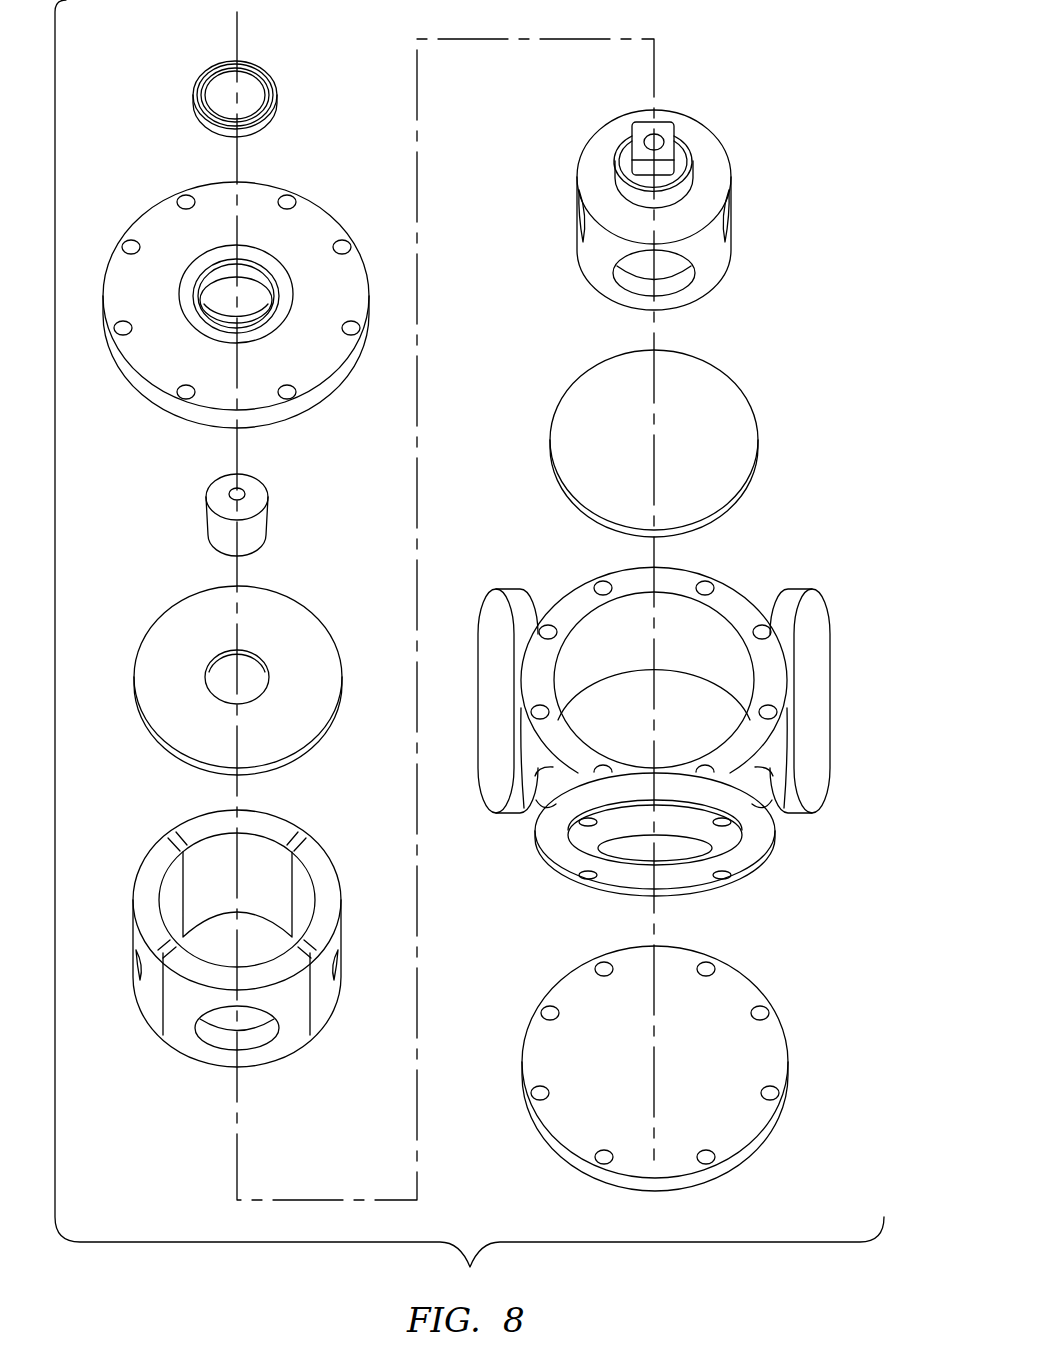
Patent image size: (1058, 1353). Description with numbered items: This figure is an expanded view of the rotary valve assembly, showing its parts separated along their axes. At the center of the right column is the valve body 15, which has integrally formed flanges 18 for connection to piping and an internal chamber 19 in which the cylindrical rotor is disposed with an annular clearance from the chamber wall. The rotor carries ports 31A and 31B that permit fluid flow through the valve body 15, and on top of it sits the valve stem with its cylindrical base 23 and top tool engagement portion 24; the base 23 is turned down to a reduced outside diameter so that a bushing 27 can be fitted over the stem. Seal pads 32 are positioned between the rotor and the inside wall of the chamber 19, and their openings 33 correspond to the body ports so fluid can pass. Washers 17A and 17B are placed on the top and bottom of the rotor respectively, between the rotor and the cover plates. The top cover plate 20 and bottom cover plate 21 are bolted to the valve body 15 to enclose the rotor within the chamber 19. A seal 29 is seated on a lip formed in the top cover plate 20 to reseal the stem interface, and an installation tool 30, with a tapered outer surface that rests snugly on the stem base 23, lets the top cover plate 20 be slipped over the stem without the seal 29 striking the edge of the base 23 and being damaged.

The seal 29 is at (197, 100).
The top cover plate 20 is at (153, 210).
The installation tool 30 is at (208, 515).
The washer 17A is at (188, 607).
The seal pads 32 is at (192, 818).
The openings 33 is at (138, 968).
The port 31A is at (578, 217).
The port 31B is at (665, 282).
The bushing 27 is at (682, 188).
The cylindrical base 23 is at (678, 158).
The top tool engagement portion 24 is at (667, 123).
The washer 17B is at (746, 392).
The chamber 19 is at (699, 644).
The valve body 15 is at (772, 772).
The flanges 18 is at (523, 598).
The bottom cover plate 21 is at (745, 978).